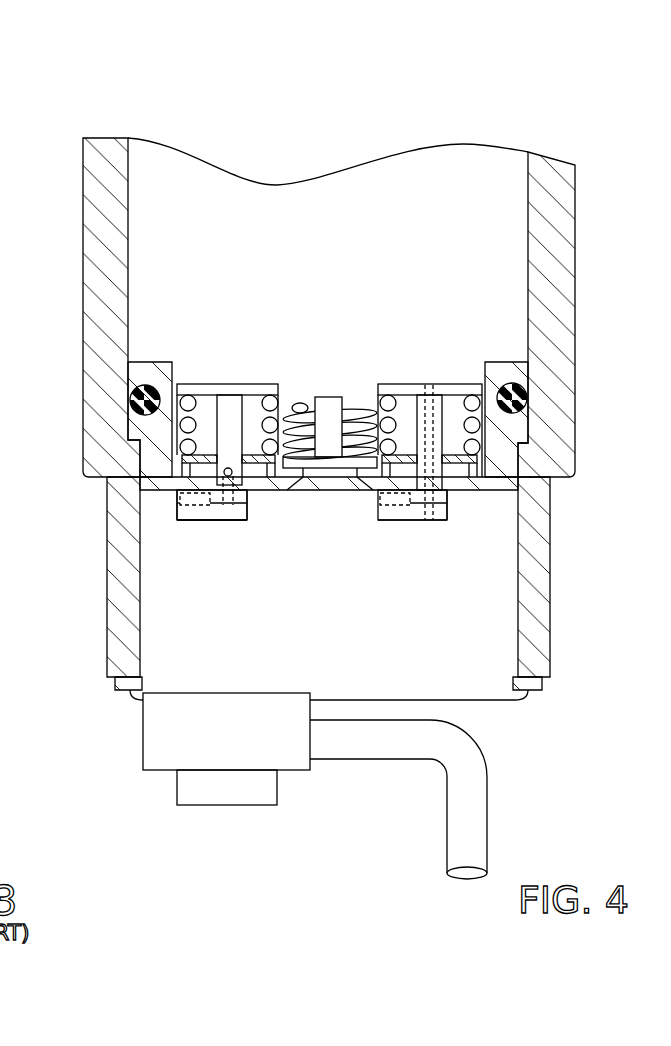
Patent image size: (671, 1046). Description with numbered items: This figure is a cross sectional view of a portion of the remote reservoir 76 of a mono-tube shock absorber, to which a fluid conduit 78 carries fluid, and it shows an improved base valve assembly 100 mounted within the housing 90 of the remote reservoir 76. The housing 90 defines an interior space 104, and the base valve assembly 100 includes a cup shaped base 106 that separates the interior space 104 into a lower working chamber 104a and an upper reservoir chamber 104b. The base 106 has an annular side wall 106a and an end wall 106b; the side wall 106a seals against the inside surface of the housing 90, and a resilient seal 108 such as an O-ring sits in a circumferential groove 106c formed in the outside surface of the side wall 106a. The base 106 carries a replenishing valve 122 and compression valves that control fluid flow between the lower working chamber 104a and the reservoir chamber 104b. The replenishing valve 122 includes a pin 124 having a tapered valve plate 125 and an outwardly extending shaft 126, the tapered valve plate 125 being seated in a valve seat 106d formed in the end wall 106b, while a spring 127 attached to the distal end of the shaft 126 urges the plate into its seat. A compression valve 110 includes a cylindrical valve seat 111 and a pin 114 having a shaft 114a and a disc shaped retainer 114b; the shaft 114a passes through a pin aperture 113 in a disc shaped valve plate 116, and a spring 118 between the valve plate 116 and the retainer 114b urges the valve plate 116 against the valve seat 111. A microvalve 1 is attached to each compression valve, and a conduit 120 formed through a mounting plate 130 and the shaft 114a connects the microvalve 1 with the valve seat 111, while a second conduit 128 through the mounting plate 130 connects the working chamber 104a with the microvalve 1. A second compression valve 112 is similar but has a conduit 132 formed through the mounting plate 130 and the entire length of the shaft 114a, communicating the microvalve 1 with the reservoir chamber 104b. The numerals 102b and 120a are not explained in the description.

The remote reservoir 76 is at (82, 112).
The fluid conduit 78 is at (455, 818).
The housing 90 is at (74, 266).
The base valve assembly 100 is at (510, 651).
The contact surface 102b is at (230, 522).
The interior space 104 is at (135, 210).
The lower working chamber 104a is at (145, 601).
The reservoir chamber 104b is at (503, 188).
The base 106 is at (151, 351).
The side wall 106a is at (133, 432).
The end wall 106b is at (497, 492).
The circumferential groove 106c is at (527, 383).
The valve seat 106d is at (330, 483).
The resilient seal 108 is at (525, 410).
The compression valve 110 is at (226, 288).
The valve seat 111 is at (178, 472).
The second compression valve 112 is at (441, 288).
The pin aperture 113 is at (292, 484).
The pin 114 is at (248, 462).
The shaft 114a is at (231, 400).
The retainer 114b is at (199, 392).
The valve plate 116 is at (280, 376).
The spring 118 is at (180, 446).
The conduit 120 is at (215, 508).
The contact block portion 120a is at (196, 522).
The replenishing valve 122 is at (331, 288).
The pin 124 is at (357, 403).
The tapered valve plate 125 is at (312, 472).
The shaft 126 is at (320, 398).
The spring 127 is at (306, 404).
The second conduit 128 is at (176, 496).
The mounting plate 130 is at (258, 522).
The conduit 132 is at (433, 521).
The microvalve 1 is at (178, 523).